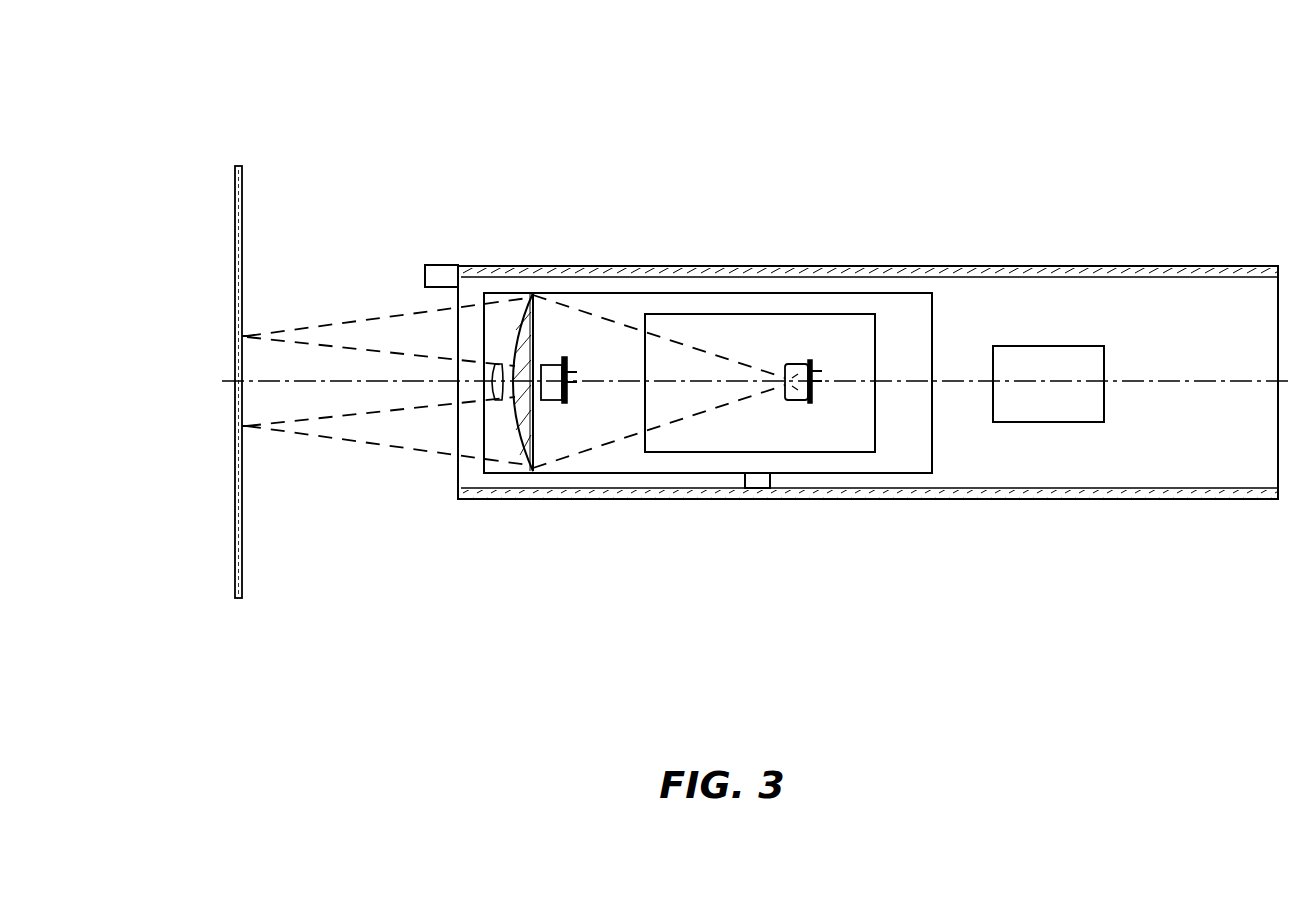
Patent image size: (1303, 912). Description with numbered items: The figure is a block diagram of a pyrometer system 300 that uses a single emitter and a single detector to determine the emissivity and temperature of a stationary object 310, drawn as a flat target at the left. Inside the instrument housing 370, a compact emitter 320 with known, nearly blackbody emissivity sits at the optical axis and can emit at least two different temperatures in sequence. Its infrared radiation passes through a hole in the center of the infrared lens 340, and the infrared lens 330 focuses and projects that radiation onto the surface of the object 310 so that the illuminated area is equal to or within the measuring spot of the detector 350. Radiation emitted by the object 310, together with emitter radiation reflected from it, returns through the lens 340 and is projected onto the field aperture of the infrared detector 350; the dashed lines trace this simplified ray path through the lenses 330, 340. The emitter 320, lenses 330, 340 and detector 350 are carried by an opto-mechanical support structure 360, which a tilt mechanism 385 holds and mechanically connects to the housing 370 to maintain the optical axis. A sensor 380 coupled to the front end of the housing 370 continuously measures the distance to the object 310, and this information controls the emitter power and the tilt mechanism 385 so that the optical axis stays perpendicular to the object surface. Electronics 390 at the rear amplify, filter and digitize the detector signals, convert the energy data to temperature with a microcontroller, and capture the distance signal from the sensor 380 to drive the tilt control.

The pyrometer system 300 is at (417, 87).
The object 310 is at (243, 222).
The emitter 320 is at (560, 355).
The infrared lens 330 is at (497, 403).
The infrared lens 340 is at (526, 287).
The infrared detector 350 is at (803, 358).
The opto-mechanical support structure 360 is at (714, 289).
The instrument housing 370 is at (882, 264).
The sensor 380 is at (441, 259).
The tilt mechanism 385 is at (775, 492).
The electronics 390 is at (1068, 342).